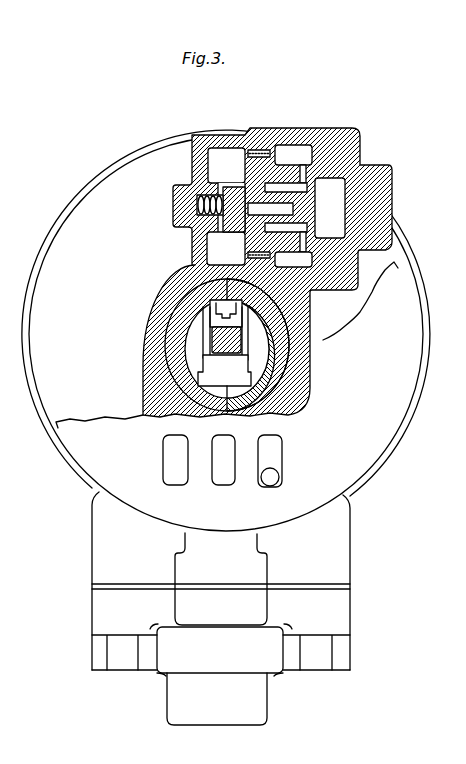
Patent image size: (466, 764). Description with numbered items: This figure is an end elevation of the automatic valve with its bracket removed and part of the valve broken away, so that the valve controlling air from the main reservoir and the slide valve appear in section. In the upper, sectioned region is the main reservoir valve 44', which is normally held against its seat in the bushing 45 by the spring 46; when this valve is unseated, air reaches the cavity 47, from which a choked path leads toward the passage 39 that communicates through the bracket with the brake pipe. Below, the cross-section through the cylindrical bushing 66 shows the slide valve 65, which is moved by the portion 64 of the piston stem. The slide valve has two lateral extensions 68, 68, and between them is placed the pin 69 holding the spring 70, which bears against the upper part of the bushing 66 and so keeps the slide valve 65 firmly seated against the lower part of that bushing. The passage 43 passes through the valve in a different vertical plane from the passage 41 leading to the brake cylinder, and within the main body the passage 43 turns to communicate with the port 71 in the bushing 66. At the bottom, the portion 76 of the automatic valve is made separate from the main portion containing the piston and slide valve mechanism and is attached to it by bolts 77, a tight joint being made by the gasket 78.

The passage 39 is at (273, 452).
The passage 41 is at (222, 476).
The passage 43 is at (170, 466).
The main reservoir valve 44' is at (226, 246).
The bushing 45 is at (263, 150).
The spring 46 is at (200, 194).
The cavity 47 is at (222, 157).
The portion of piston stem 64 is at (243, 343).
The slide valve 65 is at (240, 378).
The bushing 66 is at (201, 366).
The lateral extensions 68 is at (207, 340).
The pin 69 is at (210, 318).
The spring 70 is at (210, 302).
The port 71 is at (161, 423).
The portion of automatic valve 76 is at (170, 657).
The bolts 77 is at (120, 655).
The gasket 78 is at (95, 585).